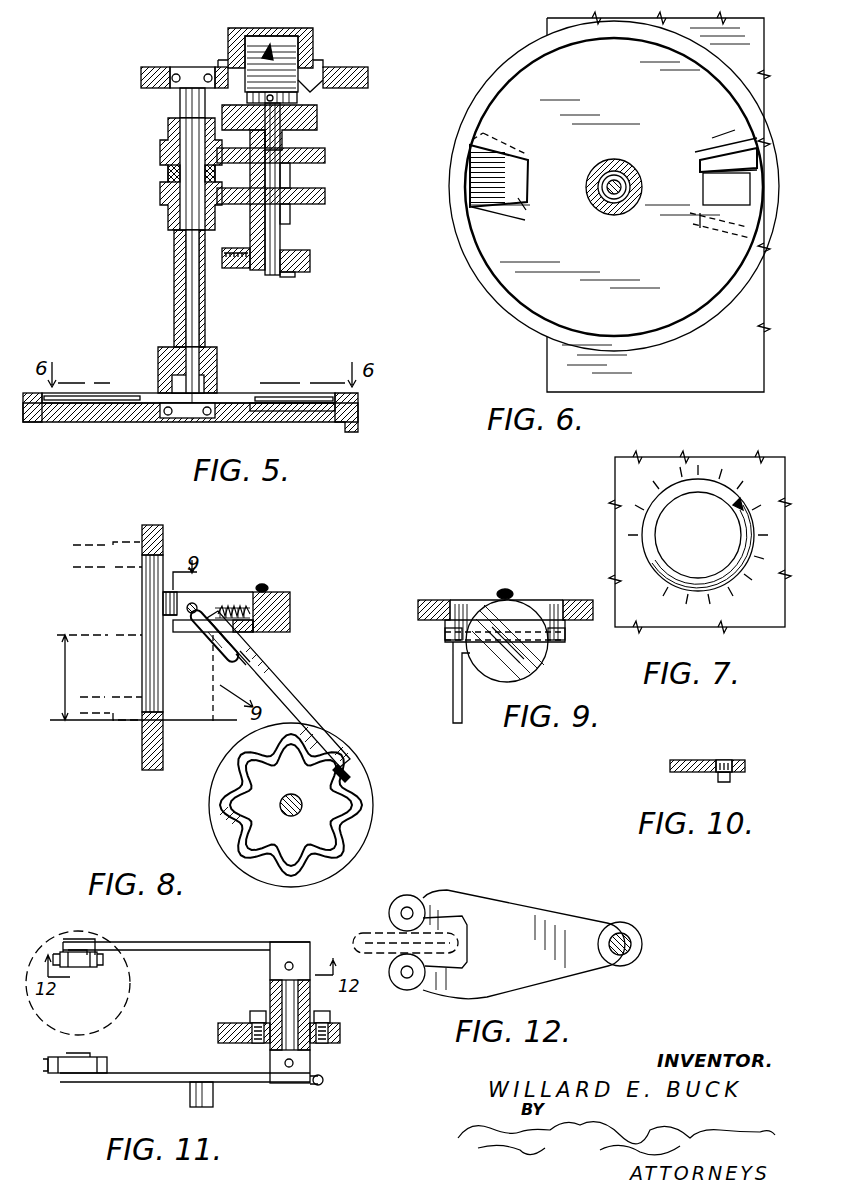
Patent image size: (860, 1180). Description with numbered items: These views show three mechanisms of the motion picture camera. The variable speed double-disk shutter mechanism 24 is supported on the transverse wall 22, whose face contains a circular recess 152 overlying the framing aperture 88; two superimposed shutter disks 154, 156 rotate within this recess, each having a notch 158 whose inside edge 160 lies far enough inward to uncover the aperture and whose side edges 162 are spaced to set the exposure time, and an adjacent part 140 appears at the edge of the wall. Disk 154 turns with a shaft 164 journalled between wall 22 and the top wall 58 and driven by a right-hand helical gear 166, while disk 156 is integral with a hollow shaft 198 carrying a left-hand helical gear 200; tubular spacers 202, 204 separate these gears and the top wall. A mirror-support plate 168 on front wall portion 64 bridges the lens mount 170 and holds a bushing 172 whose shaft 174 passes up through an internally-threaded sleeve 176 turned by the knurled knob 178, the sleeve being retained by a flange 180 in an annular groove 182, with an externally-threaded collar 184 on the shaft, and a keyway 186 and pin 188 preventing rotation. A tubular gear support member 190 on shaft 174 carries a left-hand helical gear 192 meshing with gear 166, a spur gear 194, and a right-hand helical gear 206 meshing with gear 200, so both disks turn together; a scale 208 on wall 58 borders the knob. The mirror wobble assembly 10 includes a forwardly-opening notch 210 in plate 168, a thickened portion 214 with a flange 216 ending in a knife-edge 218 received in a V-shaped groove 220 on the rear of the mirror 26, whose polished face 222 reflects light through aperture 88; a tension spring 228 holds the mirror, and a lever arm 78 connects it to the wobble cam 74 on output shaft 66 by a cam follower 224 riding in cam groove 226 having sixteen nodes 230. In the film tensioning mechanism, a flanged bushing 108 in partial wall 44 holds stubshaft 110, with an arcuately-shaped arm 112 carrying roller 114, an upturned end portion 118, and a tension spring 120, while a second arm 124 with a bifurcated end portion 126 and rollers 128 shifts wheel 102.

In FIG. 5, the top wall 58 is at (152, 70).
In FIG. 7, the top wall 58 is at (625, 512).
In FIG. 5, the knurled knob 178 is at (228, 34).
In FIG. 7, the knurled knob 178 is at (698, 535).
In FIG. 5, the externally-threaded collar 184 is at (268, 56).
In FIG. 5, the internally-threaded sleeve 176 is at (313, 42).
In FIG. 5, the annular groove 182 is at (335, 75).
In FIG. 5, the peripheral flange 180 is at (302, 93).
In FIG. 5, the tubular spacer 204 is at (180, 98).
In FIG. 5, the spur gear 194 is at (317, 122).
In FIG. 5, the right-hand helical gear 166 is at (160, 148).
In FIG. 5, the tubular spacer 202 is at (168, 173).
In FIG. 5, the left-hand helical gear 200 is at (160, 193).
In FIG. 5, the shaft 174 is at (285, 208).
In FIG. 5, the keyway 186 is at (258, 275).
In FIG. 5, the left-hand helical gear 192 is at (325, 156).
In FIG. 5, the tubular gear support member 190 is at (325, 190).
In FIG. 5, the right-hand helical gear 206 is at (325, 200).
In FIG. 5, the shaft 164 is at (186, 255).
In FIG. 6, the shaft 164 is at (615, 180).
In FIG. 5, the hollow shaft 198 is at (176, 299).
In FIG. 5, the mirror-support plate 168 is at (310, 262).
In FIG. 8, the mirror-support plate 168 is at (204, 592).
In FIG. 9, the mirror-support plate 168 is at (428, 600).
In FIG. 5, the pin 188 is at (238, 270).
In FIG. 5, the bushing 172 is at (287, 278).
In FIG. 5, the shutter disk 154 is at (160, 420).
In FIG. 5, the transverse wall 22 is at (120, 422).
In FIG. 6, the transverse wall 22 is at (547, 368).
In FIG. 5, the circular recess 152 is at (55, 422).
In FIG. 6, the circular recess 152 is at (660, 326).
In FIG. 5, the end block 140 is at (338, 425).
In FIG. 5, the shutter disk 156 is at (128, 398).
In FIG. 6, the shutter disk 156 is at (614, 187).
In FIG. 5, the notch 158 is at (70, 398).
In FIG. 6, the notch 158 is at (518, 200).
In FIG. 5, the framing aperture 88 is at (308, 412).
In FIG. 6, the framing aperture 88 is at (726, 189).
In FIG. 5, the variable speed double-disk shutter mechanism 24 is at (240, 398).
In FIG. 6, the variable speed double-disk shutter mechanism 24 is at (509, 306).
In FIG. 6, the inside edge 160 is at (530, 172).
In FIG. 6, the side edges 162 is at (472, 205).
In FIG. 7, the scale 208 is at (722, 596).
In FIG. 8, the front wall portion 64 is at (163, 531).
In FIG. 8, the internally-threaded lens mount 170 is at (147, 667).
In FIG. 8, the thickened portion 214 is at (290, 596).
In FIG. 8, the forwardly-opening notch 210 is at (222, 592).
In FIG. 9, the forwardly-opening notch 210 is at (552, 604).
In FIG. 8, the tension spring 228 is at (265, 586).
In FIG. 9, the tension spring 228 is at (505, 592).
In FIG. 8, the flange 216 is at (245, 640).
In FIG. 9, the flange 216 is at (560, 642).
In FIG. 8, the mirror 26 is at (236, 650).
In FIG. 9, the mirror 26 is at (535, 667).
In FIG. 8, the plane polished face 222 is at (186, 612).
In FIG. 9, the plane polished face 222 is at (500, 668).
In FIG. 8, the V-shaped groove 220 is at (220, 632).
In FIG. 8, the knife-edge 218 is at (224, 665).
In FIG. 9, the knife-edge 218 is at (450, 642).
In FIG. 8, the lever arm 78 is at (280, 697).
In FIG. 9, the lever arm 78 is at (453, 704).
In FIG. 8, the wobble cam 74 is at (218, 820).
In FIG. 8, the cam groove 226 is at (358, 817).
In FIG. 10, the cam groove 226 is at (716, 760).
In FIG. 8, the nodes 230 is at (343, 855).
In FIG. 8, the output shaft 66 is at (281, 806).
In FIG. 8, the cam follower 224 is at (352, 766).
In FIG. 10, the cam follower 224 is at (732, 776).
In FIG. 8, the mirror wobble assembly 10 is at (310, 777).
In FIG. 11, the second arm 124 is at (170, 950).
In FIG. 12, the second arm 124 is at (568, 916).
In FIG. 11, the bifurcated end portion 126 is at (90, 946).
In FIG. 12, the bifurcated end portion 126 is at (438, 970).
In FIG. 11, the roller 128 is at (73, 967).
In FIG. 12, the roller 128 is at (408, 898).
In FIG. 11, the wheel 102 is at (127, 1000).
In FIG. 12, the wheel 102 is at (370, 943).
In FIG. 11, the flanged bushing 108 is at (270, 990).
In FIG. 11, the stubshaft 110 is at (300, 1000).
In FIG. 12, the stubshaft 110 is at (642, 940).
In FIG. 11, the partial wall 44 is at (218, 1034).
In FIG. 11, the arcuately-shaped arm 112 is at (126, 1080).
In FIG. 11, the roller 114 is at (52, 1073).
In FIG. 11, the upturned end portion 118 is at (213, 1100).
In FIG. 11, the tension spring 120 is at (322, 1086).